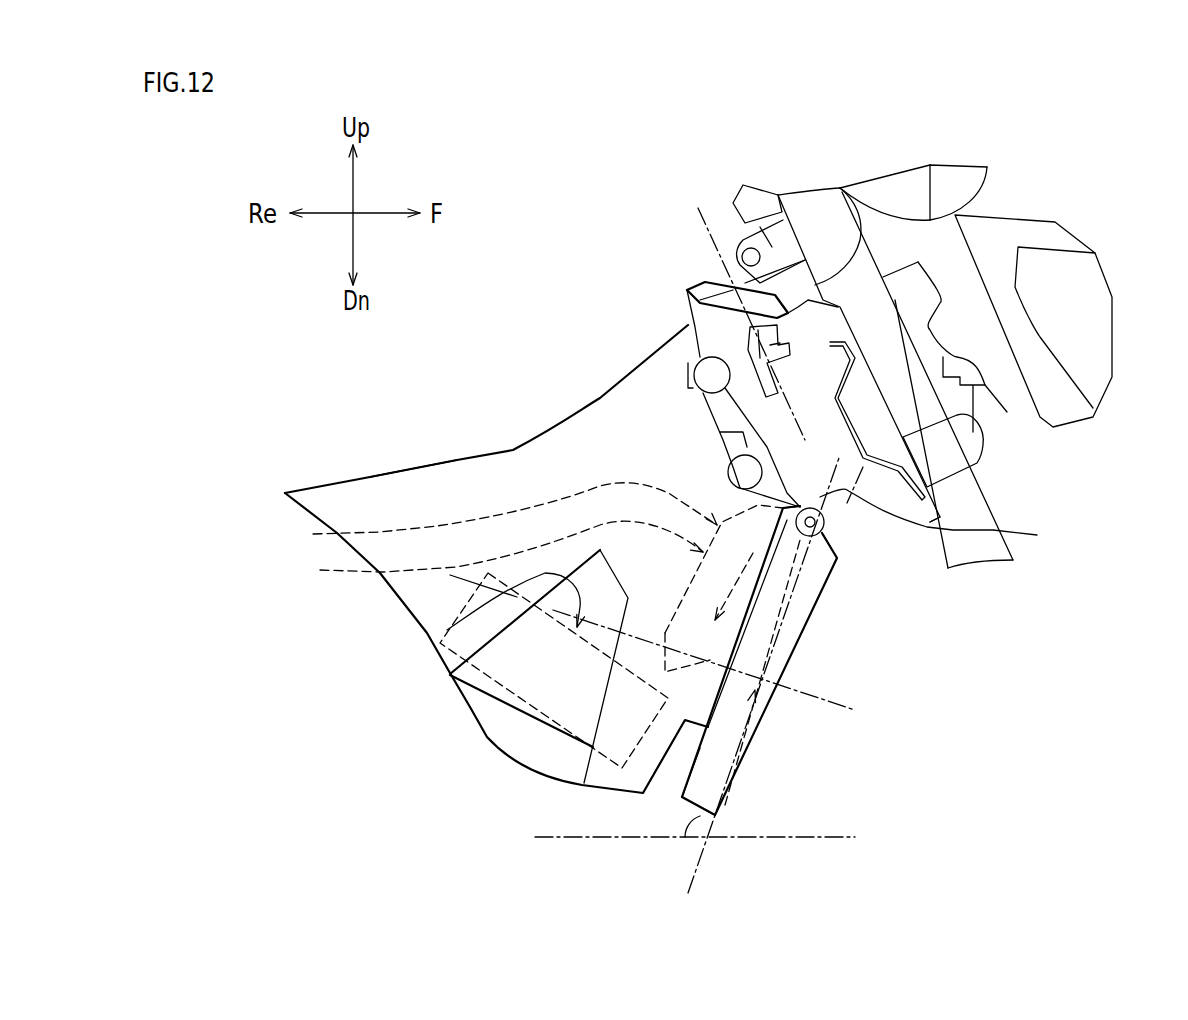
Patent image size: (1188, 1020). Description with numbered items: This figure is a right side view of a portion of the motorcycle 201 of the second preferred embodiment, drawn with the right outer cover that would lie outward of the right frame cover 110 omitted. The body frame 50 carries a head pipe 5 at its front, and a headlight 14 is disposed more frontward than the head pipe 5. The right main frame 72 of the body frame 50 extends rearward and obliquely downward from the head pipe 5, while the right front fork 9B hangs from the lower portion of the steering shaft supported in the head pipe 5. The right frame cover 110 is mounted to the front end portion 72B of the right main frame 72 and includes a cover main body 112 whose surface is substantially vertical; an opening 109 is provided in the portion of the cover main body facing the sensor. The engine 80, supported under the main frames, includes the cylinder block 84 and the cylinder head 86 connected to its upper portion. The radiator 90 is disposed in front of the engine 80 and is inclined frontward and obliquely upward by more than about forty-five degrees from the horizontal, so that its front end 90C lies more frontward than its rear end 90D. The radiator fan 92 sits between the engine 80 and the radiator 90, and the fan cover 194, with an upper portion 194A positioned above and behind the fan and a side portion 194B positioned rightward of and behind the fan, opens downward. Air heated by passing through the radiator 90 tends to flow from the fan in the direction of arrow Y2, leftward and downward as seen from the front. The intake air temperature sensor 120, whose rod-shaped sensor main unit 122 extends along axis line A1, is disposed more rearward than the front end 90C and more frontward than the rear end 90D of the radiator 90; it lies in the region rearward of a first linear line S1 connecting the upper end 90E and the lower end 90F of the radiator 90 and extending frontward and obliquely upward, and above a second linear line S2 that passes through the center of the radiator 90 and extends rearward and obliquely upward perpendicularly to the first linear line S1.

The motorcycle 201 is at (1058, 175).
The headlight 14 is at (1103, 277).
The front end portion of the right main frame 72B is at (862, 222).
The right front fork 9B is at (823, 213).
The head pipe 5 is at (782, 242).
The cover main body 112 is at (753, 315).
The axis line of the sensor main unit A1 is at (687, 235).
The right frame cover 110 is at (687, 300).
The opening 109 is at (800, 330).
The sensor main unit 122 is at (752, 335).
The intake air temperature sensor 120 is at (757, 377).
The body frame 50 is at (497, 450).
The right main frame 72 is at (410, 483).
The fan cover 194 is at (489, 517).
The side portion of the fan cover 194B is at (479, 553).
The engine 80 is at (447, 630).
The cylinder head 86 is at (530, 666).
The cylinder block 84 is at (513, 732).
The arrow indicating air flow direction Y2 is at (724, 588).
The upper portion of the fan cover 194A is at (961, 521).
The front end of the radiator 90C is at (807, 537).
The upper end of the radiator 90E is at (805, 545).
The radiator 90 is at (820, 607).
The second linear line S2 is at (840, 706).
The radiator fan 92 is at (716, 680).
The lower end of the radiator 90F is at (715, 815).
The rear end of the radiator 90D is at (680, 798).
The first linear line S1 is at (693, 875).